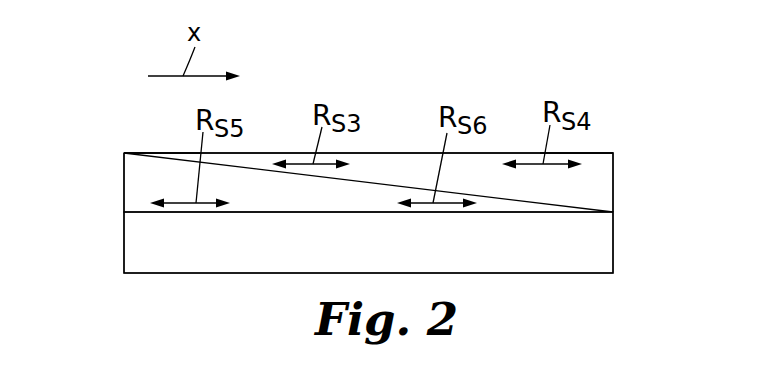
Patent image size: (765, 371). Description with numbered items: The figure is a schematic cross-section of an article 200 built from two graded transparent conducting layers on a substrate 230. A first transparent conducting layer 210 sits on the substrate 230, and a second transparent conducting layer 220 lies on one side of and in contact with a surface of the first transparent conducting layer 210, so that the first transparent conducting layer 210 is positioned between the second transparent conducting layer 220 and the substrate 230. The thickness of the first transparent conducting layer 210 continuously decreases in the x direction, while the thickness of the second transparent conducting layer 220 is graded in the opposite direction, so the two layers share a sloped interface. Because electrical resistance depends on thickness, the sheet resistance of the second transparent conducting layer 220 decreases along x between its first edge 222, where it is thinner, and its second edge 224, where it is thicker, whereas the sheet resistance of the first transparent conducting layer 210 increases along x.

The article 200 is at (622, 86).
The first transparent conducting layer 210 is at (143, 196).
The second transparent conducting layer 220 is at (596, 189).
The first edge 222 is at (124, 153).
The second edge 224 is at (613, 163).
The substrate 230 is at (148, 248).